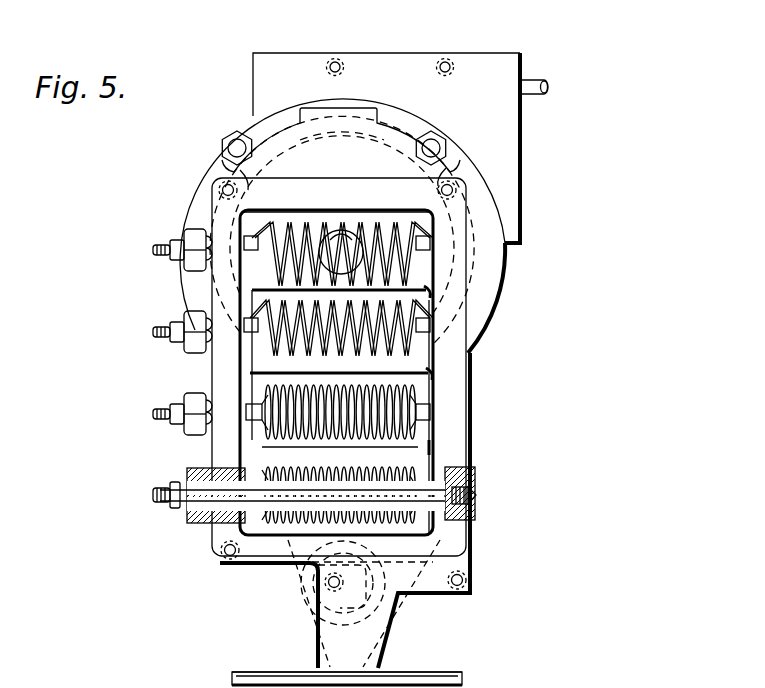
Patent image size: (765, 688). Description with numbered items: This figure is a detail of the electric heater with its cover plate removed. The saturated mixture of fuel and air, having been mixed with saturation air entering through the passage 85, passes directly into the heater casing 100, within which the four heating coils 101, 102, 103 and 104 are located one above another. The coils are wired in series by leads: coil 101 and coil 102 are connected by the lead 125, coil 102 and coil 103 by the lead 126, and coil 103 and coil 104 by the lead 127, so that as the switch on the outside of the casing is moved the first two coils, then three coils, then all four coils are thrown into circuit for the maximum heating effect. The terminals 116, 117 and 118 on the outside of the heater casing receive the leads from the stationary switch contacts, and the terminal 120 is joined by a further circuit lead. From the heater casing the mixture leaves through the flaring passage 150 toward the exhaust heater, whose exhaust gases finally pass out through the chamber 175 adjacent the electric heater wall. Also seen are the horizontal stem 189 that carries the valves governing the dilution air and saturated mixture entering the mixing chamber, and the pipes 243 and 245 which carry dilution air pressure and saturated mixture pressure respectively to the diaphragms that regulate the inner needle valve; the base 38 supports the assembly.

The base plate 38 is at (367, 680).
The saturation air passage 85 is at (340, 594).
The heater casing 100 is at (299, 222).
The heating coil 101 is at (420, 466).
The heating coil 102 is at (420, 390).
The heating coil 103 is at (420, 306).
The heating coil 104 is at (425, 217).
The terminal 116 is at (195, 418).
The terminal 117 is at (193, 335).
The terminal 118 is at (193, 251).
The terminal 120 is at (195, 505).
The lead 125 is at (422, 446).
The lead 126 is at (432, 364).
The lead 127 is at (436, 272).
The flaring passage 150 is at (345, 228).
The chamber 175 is at (380, 142).
The horizontal stem 189 is at (548, 86).
The pipe 243 is at (445, 61).
The pipe 245 is at (335, 61).